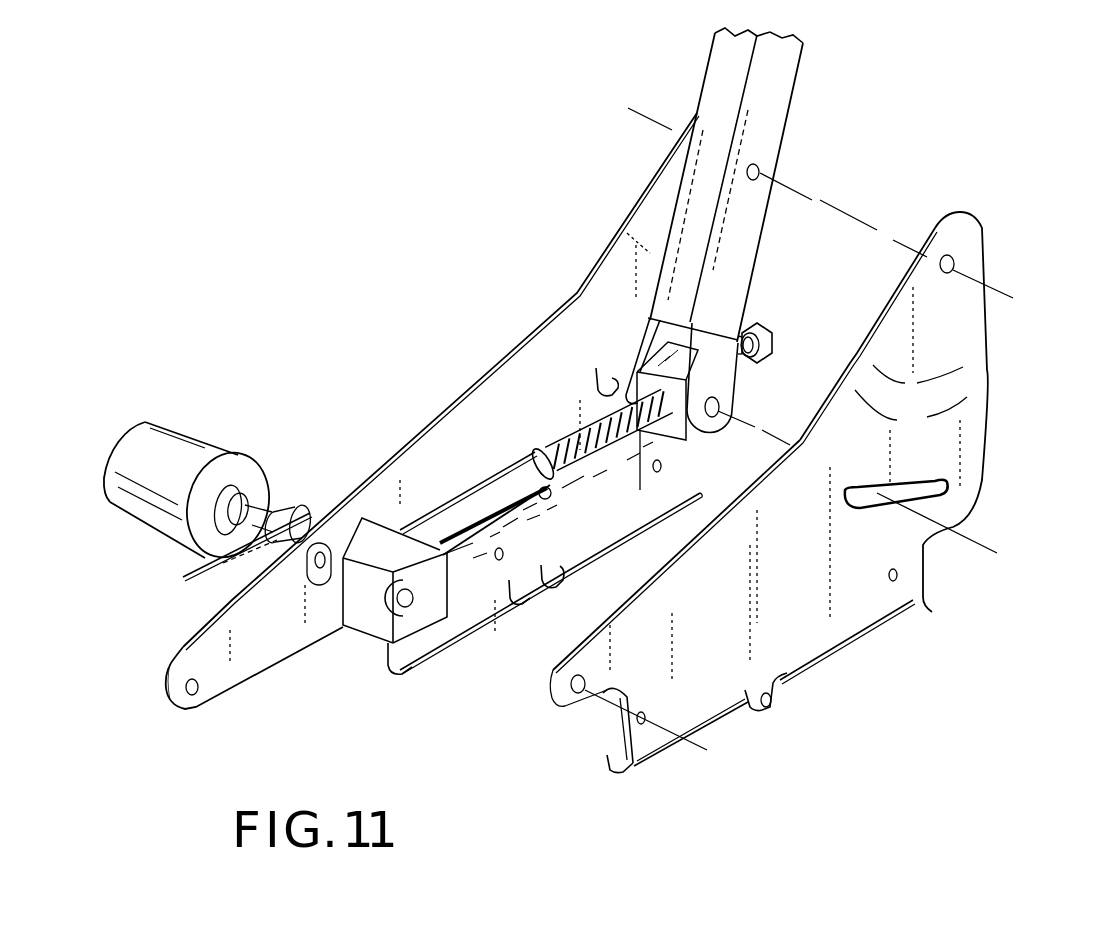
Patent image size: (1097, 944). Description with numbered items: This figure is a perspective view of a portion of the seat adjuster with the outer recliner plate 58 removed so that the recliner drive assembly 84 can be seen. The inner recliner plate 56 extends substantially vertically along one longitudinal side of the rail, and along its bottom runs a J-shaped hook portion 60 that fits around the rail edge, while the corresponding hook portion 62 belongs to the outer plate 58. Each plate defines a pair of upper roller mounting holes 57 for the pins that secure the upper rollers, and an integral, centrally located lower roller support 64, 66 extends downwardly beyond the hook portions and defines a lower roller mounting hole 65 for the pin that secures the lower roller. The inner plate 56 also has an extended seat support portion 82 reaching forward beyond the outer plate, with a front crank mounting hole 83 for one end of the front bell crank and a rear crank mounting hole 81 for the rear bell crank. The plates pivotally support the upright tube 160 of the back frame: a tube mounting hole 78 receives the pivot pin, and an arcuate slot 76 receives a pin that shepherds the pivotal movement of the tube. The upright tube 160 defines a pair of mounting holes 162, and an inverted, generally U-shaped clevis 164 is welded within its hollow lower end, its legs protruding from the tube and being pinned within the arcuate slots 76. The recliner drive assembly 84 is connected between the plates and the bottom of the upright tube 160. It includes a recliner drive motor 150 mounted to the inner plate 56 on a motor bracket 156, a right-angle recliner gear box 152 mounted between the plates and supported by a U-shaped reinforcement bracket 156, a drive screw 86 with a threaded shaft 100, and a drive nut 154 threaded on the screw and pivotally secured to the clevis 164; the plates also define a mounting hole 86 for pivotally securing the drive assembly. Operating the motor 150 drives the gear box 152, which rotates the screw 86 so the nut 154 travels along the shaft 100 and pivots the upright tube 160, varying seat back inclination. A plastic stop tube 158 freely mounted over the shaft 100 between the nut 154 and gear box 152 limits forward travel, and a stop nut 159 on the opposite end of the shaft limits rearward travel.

The inner recliner plate 56 is at (573, 287).
The upper roller mounting holes 57 is at (657, 473).
The outer recliner plate 58 is at (988, 417).
The J-shaped hook portion 60 is at (387, 669).
The J-shaped hook portion 62 is at (636, 768).
The lower roller support 64 is at (514, 604).
The lower roller mounting hole 65 is at (545, 585).
The lower roller support 66 is at (771, 707).
The arcuate slot 76 is at (940, 487).
The tube mounting hole 78 is at (955, 258).
The rear crank mounting hole 81 is at (551, 495).
The extended seat support portion 82 is at (183, 652).
The front crank mounting hole 83 is at (193, 696).
The recliner drive assembly 84 is at (350, 660).
The drive screw 86 is at (313, 547).
The threaded shaft 100 is at (565, 440).
The recliner drive motor 150 is at (202, 438).
The recliner gear box 152 is at (345, 630).
The drive nut 154 is at (648, 312).
The motor bracket 156 is at (218, 575).
The stop tube 158 is at (478, 484).
The stop nut 159 is at (773, 333).
The upright tube 160 is at (793, 103).
The mounting holes 162 is at (760, 170).
The clevis 164 is at (718, 405).